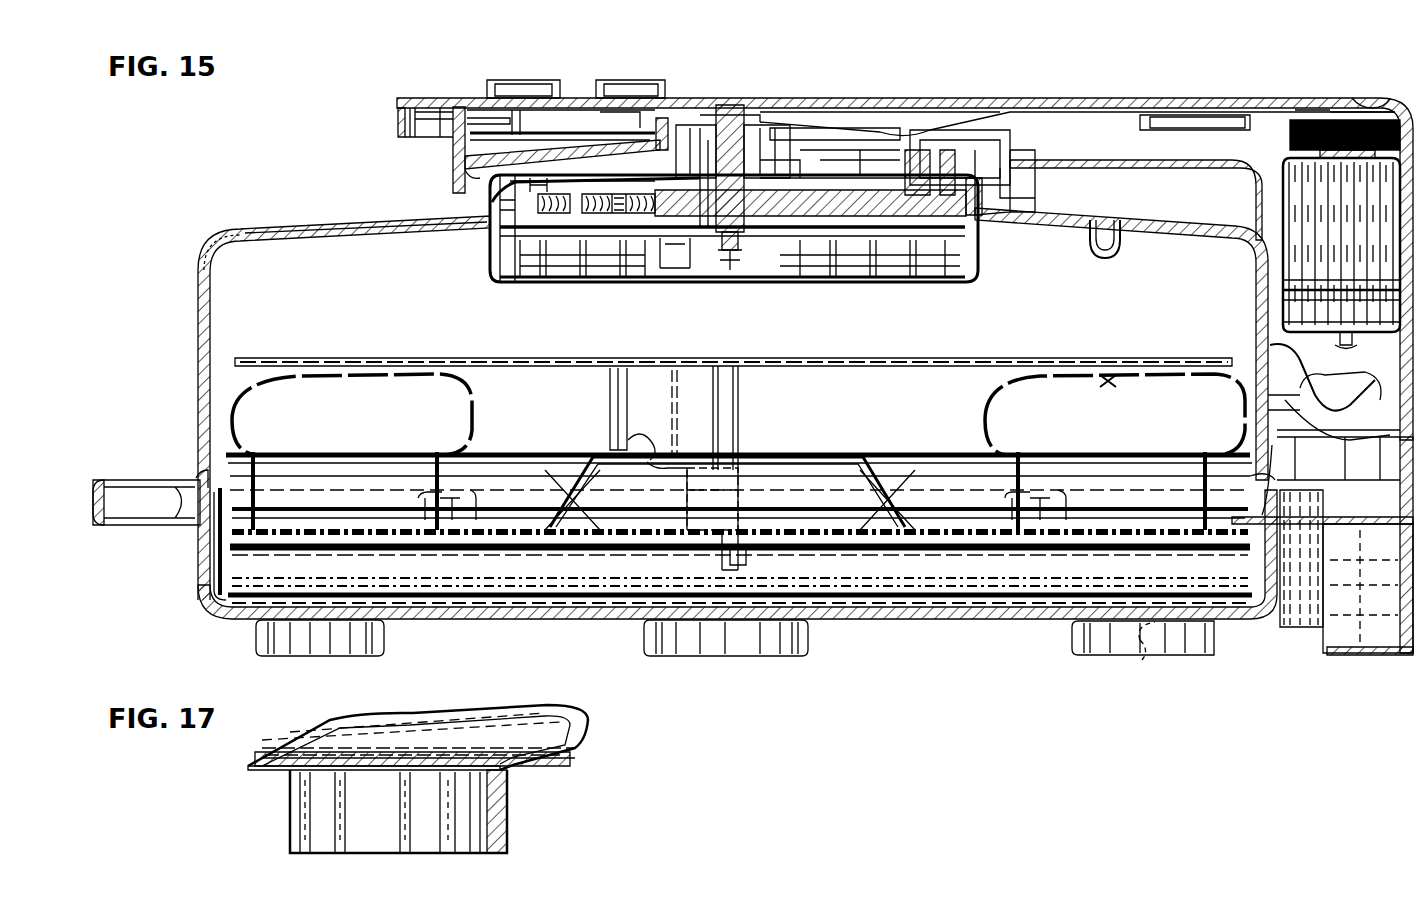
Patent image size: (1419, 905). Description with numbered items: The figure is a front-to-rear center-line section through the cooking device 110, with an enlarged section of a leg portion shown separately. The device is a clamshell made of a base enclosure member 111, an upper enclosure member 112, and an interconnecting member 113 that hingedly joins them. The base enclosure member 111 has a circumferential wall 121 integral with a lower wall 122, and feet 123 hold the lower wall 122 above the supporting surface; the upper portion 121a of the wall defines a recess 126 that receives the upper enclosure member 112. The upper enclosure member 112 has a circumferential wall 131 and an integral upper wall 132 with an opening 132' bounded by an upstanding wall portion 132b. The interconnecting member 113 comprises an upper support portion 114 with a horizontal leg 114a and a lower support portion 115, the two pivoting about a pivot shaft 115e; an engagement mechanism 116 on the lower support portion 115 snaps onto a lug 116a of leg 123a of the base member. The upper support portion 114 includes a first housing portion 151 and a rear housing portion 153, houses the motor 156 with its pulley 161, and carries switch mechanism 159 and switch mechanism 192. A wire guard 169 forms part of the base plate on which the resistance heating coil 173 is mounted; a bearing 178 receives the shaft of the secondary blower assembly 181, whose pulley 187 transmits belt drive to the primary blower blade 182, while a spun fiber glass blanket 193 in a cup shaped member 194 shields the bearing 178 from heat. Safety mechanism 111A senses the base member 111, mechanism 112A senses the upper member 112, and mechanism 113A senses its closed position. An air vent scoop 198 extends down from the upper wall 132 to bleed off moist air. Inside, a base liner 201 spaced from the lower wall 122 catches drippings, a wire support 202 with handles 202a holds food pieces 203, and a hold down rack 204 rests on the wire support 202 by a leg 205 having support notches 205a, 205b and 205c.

In FIG. 15, the cooking device 110 is at (325, 147).
In FIG. 15, the base enclosure member 111 is at (208, 612).
In FIG. 17, the base enclosure member 111 is at (580, 740).
In FIG. 15, the safety mechanism 111A is at (1272, 445).
In FIG. 15, the upper enclosure member 112 is at (198, 306).
In FIG. 15, the sensing mechanism 112A is at (1272, 350).
In FIG. 15, the interconnecting member 113 is at (480, 95).
In FIG. 15, the position sensing mechanism 113A is at (1275, 410).
In FIG. 15, the upper support portion 114 is at (935, 97).
In FIG. 15, the horizontal leg 114a is at (1070, 95).
In FIG. 15, the lower support portion 115 is at (1327, 662).
In FIG. 15, the pivot shaft 115e is at (1300, 395).
In FIG. 15, the engagement mechanism 116 is at (1238, 633).
In FIG. 15, the lug 116a is at (1140, 660).
In FIG. 15, the circumferential wall 121 is at (205, 562).
In FIG. 15, the upper portion of circumferential wall 121a is at (190, 480).
In FIG. 15, the lower wall 122 is at (935, 625).
In FIG. 15, the feet 123 is at (382, 645).
In FIG. 17, the feet 123 is at (495, 803).
In FIG. 15, the leg 123a is at (1072, 648).
In FIG. 15, the recess 126 is at (190, 475).
In FIG. 15, the circumferential wall 131 is at (212, 312).
In FIG. 15, the upper wall 132 is at (366, 241).
In FIG. 15, the upstanding wall portion 132b is at (460, 196).
In FIG. 15, the opening 132' is at (559, 217).
In FIG. 15, the first housing portion 151 is at (1160, 170).
In FIG. 15, the rear housing portion 153 is at (1400, 98).
In FIG. 15, the motor 156 is at (1300, 255).
In FIG. 15, the switch mechanism 159 is at (650, 92).
In FIG. 15, the pulley 161 is at (1318, 128).
In FIG. 15, the wire guard 169 is at (965, 268).
In FIG. 15, the resistance heating coil 173 is at (930, 224).
In FIG. 15, the bearing 178 is at (770, 150).
In FIG. 15, the secondary blower assembly 181 is at (555, 230).
In FIG. 15, the primary blower blade 182 is at (888, 260).
In FIG. 15, the pulley 187 is at (676, 125).
In FIG. 15, the switch mechanism 192 is at (560, 60).
In FIG. 15, the spun fiber glass blanket 193 is at (730, 270).
In FIG. 15, the cup shaped member 194 is at (682, 270).
In FIG. 15, the air vent scoop 198 is at (1122, 260).
In FIG. 15, the base liner 201 is at (548, 605).
In FIG. 15, the wire support 202 is at (490, 475).
In FIG. 15, the handles 202a is at (812, 457).
In FIG. 15, the food pieces 203 is at (475, 420).
In FIG. 15, the hold down rack 204 is at (583, 356).
In FIG. 15, the leg 205 is at (735, 396).
In FIG. 15, the support notch 205a is at (722, 555).
In FIG. 15, the support notch 205b is at (695, 462).
In FIG. 15, the support notch 205c is at (633, 425).